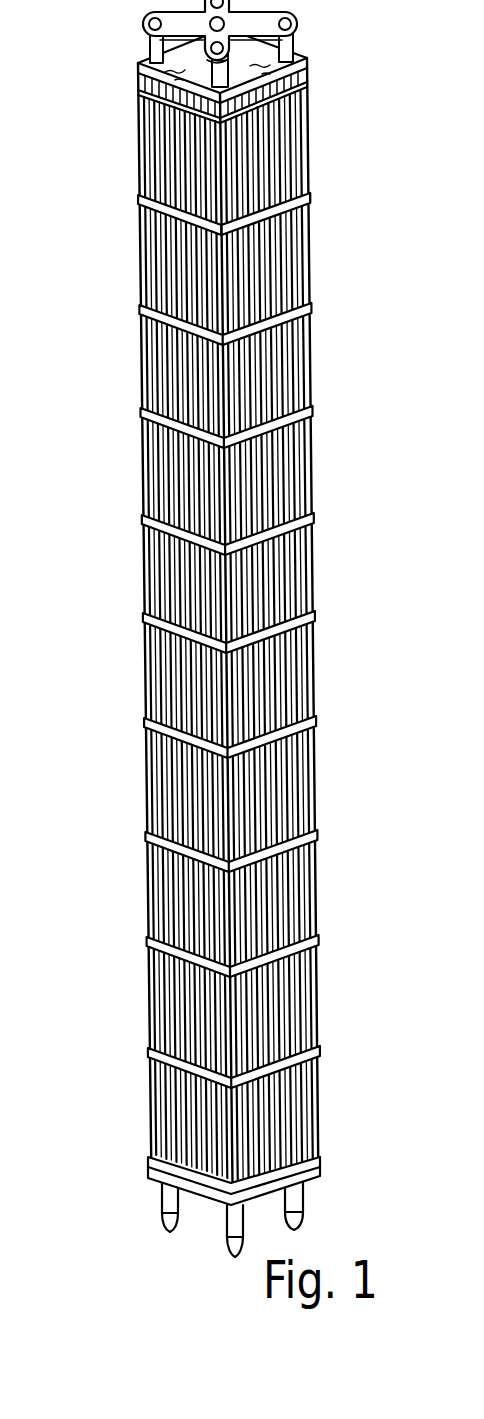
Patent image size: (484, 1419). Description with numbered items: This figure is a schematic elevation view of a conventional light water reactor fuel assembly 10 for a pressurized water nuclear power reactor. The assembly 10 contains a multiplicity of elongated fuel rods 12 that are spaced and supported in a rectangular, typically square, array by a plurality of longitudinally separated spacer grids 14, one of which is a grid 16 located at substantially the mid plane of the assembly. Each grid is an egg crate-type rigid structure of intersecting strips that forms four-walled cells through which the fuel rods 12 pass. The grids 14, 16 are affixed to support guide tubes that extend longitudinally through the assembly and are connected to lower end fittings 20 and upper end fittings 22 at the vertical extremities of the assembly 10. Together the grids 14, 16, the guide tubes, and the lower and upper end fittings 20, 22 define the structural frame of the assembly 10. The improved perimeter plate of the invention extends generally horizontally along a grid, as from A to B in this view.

The fuel assembly 10 is at (350, 137).
The fuel rods 12 is at (138, 118).
The spacer grids 14 is at (139, 198).
The grid 16 is at (140, 617).
The lower end fittings 20 is at (307, 1192).
The upper end fittings 22 is at (292, 45).
The perimeter plate end location A is at (293, 193).
The perimeter plate end location B is at (222, 230).